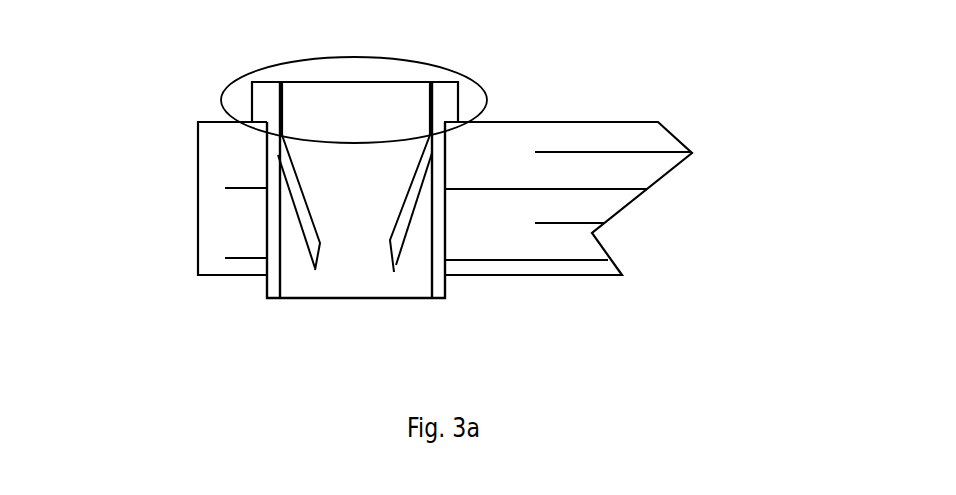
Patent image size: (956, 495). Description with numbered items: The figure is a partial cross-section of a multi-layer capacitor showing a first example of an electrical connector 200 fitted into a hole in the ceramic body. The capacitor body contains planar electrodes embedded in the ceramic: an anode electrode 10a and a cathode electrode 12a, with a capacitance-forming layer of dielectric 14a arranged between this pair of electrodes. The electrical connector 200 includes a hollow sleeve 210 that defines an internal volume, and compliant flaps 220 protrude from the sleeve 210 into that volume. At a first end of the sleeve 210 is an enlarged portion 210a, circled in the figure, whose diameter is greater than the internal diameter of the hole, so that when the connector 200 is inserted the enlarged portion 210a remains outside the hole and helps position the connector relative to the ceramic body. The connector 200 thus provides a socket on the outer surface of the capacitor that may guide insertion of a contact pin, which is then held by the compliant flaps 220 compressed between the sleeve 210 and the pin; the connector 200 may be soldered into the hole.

The electrical connector 200 is at (314, 194).
The hollow sleeve 210 is at (275, 283).
The enlarged portion 210a is at (462, 81).
The compliant flaps 220 is at (393, 272).
The electrode 10a is at (622, 190).
The electrode 12a is at (683, 147).
The dielectric 14a is at (632, 181).